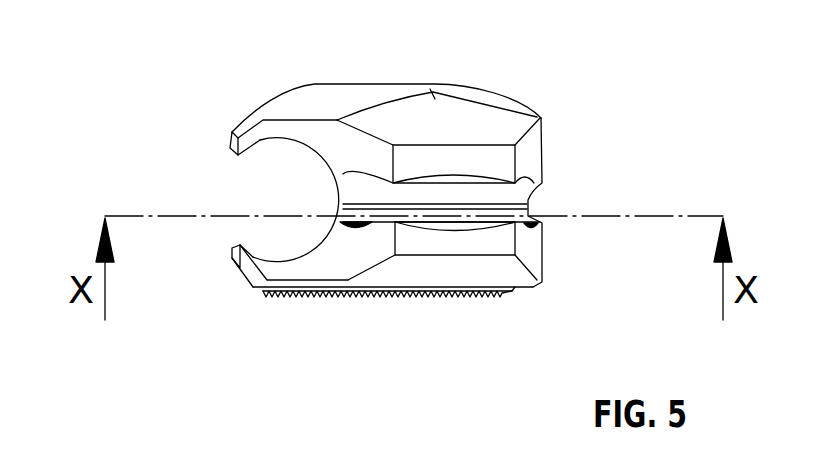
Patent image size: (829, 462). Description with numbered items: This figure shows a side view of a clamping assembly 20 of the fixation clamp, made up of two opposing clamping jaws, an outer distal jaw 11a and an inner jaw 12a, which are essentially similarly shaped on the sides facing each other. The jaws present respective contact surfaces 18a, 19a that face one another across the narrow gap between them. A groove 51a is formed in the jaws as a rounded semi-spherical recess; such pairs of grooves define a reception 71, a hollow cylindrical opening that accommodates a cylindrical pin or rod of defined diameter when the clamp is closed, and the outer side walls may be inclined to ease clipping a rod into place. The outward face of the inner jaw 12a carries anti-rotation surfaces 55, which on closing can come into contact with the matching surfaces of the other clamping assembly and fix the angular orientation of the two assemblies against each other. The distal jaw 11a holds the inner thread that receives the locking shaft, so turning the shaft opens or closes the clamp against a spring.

The first clamping assembly 20 is at (517, 103).
The distal jaw 11a is at (498, 123).
The inner jaw 12a is at (520, 247).
The contact surface 18a is at (530, 201).
The contact surface 19a is at (538, 183).
The groove 51a is at (272, 138).
The anti-rotation surfaces 55 is at (470, 292).
The first reception 71 is at (257, 190).